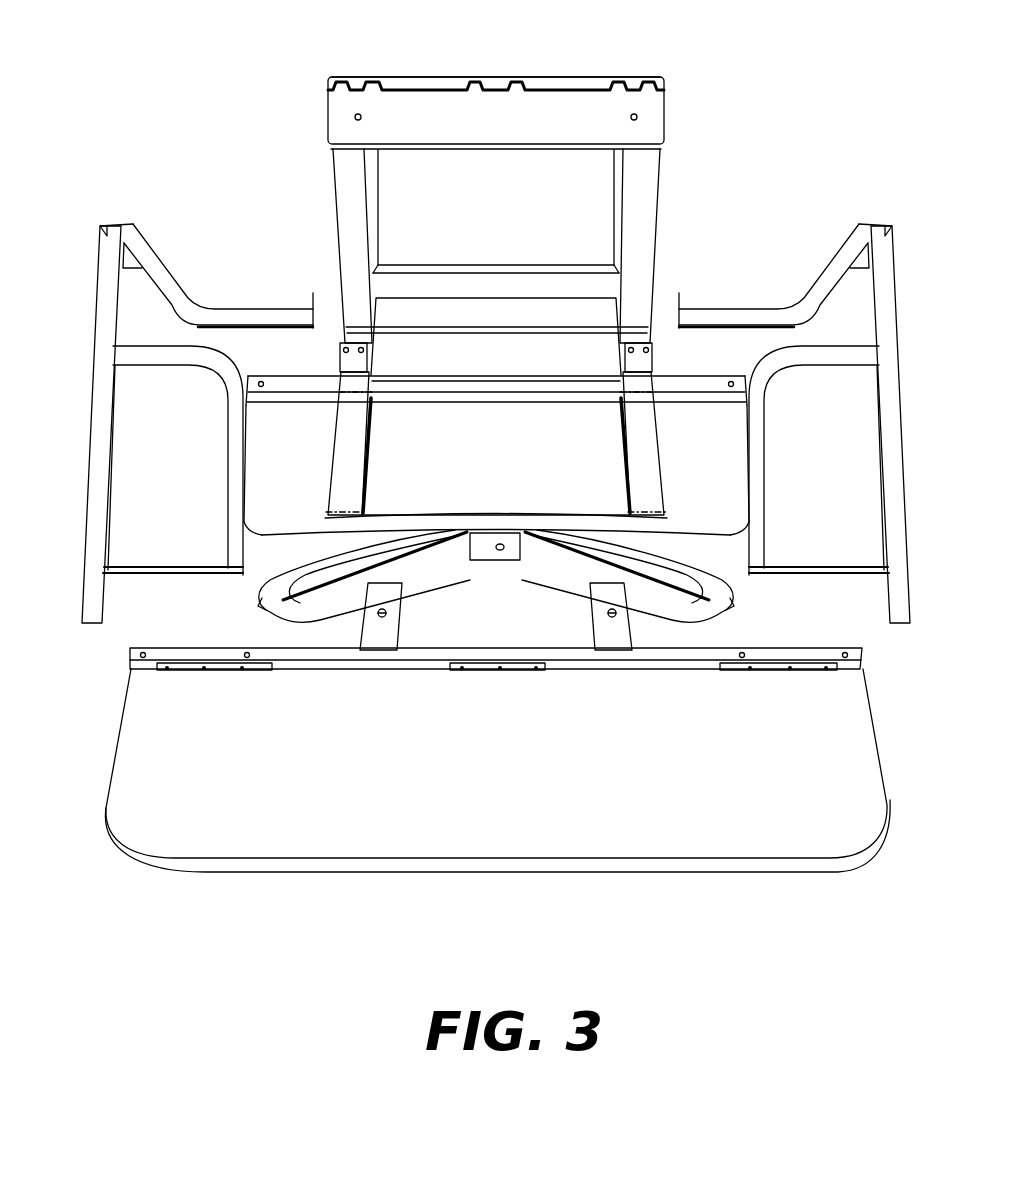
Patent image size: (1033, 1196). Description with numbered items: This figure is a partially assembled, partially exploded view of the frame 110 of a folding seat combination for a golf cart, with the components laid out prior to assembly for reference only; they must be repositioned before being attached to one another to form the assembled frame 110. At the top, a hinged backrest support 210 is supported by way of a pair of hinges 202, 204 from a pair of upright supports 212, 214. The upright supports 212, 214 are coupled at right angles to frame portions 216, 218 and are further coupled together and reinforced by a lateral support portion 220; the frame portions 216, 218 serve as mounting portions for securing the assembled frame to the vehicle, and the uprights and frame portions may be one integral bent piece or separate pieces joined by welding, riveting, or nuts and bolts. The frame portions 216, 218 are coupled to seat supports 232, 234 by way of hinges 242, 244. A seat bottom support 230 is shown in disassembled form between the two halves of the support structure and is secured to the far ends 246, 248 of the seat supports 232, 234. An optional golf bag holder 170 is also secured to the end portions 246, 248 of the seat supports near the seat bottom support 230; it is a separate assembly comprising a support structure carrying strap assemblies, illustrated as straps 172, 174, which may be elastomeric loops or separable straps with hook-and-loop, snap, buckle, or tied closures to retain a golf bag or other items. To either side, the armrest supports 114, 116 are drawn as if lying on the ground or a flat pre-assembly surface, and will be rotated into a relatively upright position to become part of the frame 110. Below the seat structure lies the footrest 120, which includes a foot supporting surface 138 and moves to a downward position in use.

The frame 110 is at (190, 900).
The armrest support 114 is at (892, 446).
The armrest support 116 is at (94, 448).
The footrest 120 is at (882, 730).
The foot supporting surface 138 is at (513, 830).
The golf bag holder 170 is at (488, 560).
The strap 172 is at (258, 598).
The strap 174 is at (736, 601).
The hinge 202 is at (425, 77).
The hinge 204 is at (553, 90).
The hinged backrest support 210 is at (665, 104).
The upright support 212 is at (333, 236).
The upright support 214 is at (654, 226).
The frame portion 216 is at (340, 348).
The frame portion 218 is at (653, 360).
The lateral support portion 220 is at (492, 269).
The seat bottom support 230 is at (268, 377).
The seat support 232 is at (372, 457).
The seat support 234 is at (632, 452).
The hinge 242 is at (358, 407).
The hinge 244 is at (648, 404).
The far end 246 is at (334, 502).
The far end 248 is at (666, 500).